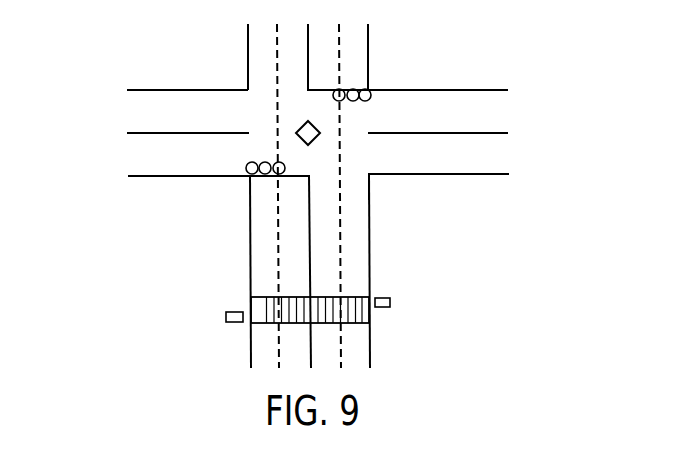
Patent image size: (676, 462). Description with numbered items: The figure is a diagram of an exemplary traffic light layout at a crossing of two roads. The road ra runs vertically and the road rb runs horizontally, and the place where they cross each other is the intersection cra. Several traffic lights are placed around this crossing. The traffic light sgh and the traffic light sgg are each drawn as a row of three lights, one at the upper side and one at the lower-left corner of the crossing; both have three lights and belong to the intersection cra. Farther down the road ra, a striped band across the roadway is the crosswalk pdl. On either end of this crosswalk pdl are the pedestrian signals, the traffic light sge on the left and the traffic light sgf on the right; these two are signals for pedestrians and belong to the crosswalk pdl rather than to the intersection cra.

The road rb is at (148, 167).
The road ra is at (250, 365).
The intersection cra is at (385, 78).
The traffic light sgh is at (372, 84).
The traffic light sgg is at (246, 172).
The traffic light sge is at (226, 318).
The traffic light sgf is at (390, 302).
The crosswalk pdl is at (358, 319).